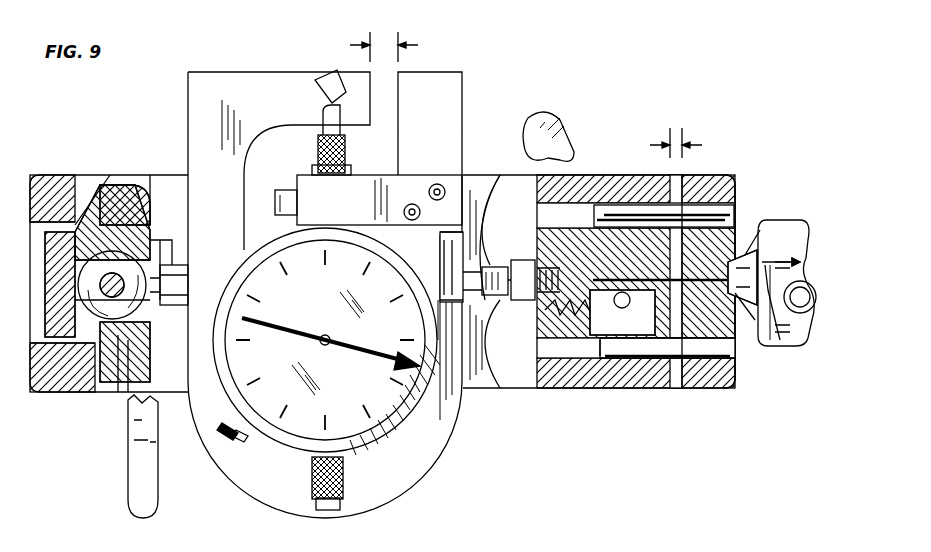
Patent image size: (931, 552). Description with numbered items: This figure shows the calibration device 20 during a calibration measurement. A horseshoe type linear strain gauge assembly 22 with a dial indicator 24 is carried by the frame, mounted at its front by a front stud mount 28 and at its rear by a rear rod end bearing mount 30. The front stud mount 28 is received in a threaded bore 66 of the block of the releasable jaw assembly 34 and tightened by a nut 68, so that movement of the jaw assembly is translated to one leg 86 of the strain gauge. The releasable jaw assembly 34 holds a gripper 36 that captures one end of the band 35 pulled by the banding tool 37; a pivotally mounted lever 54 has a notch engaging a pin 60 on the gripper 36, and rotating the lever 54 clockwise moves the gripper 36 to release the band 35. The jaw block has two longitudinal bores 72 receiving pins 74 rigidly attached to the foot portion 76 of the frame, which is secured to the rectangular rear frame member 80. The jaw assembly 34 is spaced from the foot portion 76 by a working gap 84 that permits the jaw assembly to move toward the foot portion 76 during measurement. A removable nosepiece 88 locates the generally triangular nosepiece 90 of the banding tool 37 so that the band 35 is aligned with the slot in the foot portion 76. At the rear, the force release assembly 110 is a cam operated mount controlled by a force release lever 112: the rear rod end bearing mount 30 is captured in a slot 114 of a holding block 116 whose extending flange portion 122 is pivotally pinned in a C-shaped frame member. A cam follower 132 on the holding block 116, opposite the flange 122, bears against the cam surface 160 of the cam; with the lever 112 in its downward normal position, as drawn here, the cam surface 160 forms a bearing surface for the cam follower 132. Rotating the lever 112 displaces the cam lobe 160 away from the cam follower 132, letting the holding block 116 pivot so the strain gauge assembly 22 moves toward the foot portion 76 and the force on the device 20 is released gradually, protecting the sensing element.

The calibration device 20 is at (498, 86).
The strain gauge assembly 22 is at (300, 68).
The dial indicator 24 is at (388, 430).
The front stud mount 28 is at (490, 300).
The rear rod end bearing mount 30 is at (95, 300).
The releasable jaw assembly 34 is at (622, 176).
The band 35 is at (737, 250).
The gripper 36 is at (660, 345).
The banding tool 37 is at (782, 218).
The lever 54 is at (565, 125).
The pin 60 is at (605, 335).
The threaded bore 66 is at (545, 215).
The nut 68 is at (502, 175).
The longitudinal bores 72 is at (592, 200).
The pins 74 is at (688, 388).
The foot portion 76 is at (737, 175).
The rear frame member 80 is at (500, 175).
The gap 84 is at (684, 125).
The leg 86 is at (440, 62).
The removable nosepiece 88 is at (750, 320).
The nosepiece 90 is at (780, 330).
The force release assembly 110 is at (35, 395).
The force release lever 112 is at (160, 500).
The slot 114 is at (120, 385).
The holding block 116 is at (48, 182).
The extending flange portion 122 is at (125, 395).
The cam follower 132 is at (75, 200).
The cam surface 160 is at (100, 225).